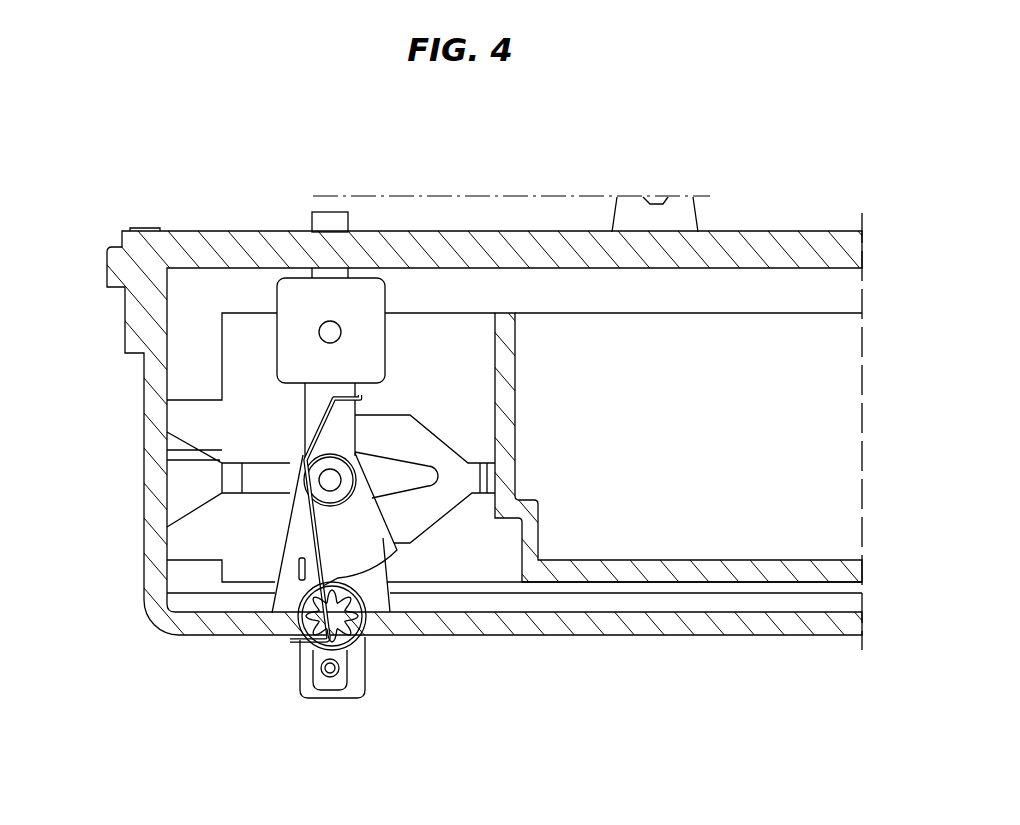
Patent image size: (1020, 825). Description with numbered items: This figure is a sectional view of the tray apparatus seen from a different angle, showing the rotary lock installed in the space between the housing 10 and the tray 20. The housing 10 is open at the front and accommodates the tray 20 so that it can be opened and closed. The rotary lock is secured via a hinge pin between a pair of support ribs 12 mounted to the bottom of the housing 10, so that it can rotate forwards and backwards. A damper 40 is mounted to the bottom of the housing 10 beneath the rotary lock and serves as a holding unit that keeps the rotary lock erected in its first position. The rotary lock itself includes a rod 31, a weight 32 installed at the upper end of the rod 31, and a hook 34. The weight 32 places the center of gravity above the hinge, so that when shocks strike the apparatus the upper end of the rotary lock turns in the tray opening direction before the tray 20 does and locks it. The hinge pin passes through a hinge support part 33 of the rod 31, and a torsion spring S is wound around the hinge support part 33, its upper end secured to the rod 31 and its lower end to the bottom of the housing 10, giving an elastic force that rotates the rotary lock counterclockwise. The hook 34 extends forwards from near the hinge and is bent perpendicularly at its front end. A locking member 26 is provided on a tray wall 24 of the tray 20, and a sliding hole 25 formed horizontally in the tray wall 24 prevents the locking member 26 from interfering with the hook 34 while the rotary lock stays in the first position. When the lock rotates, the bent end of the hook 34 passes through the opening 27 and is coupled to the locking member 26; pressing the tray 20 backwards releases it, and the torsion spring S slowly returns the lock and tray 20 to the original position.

The housing 10 is at (695, 625).
The support ribs 12 is at (292, 548).
The tray 20 is at (800, 570).
The tray wall 24 is at (239, 362).
The sliding hole 25 is at (257, 478).
The locking member 26 is at (365, 457).
The opening 27 is at (450, 495).
The rod 31 is at (331, 212).
The weight 32 is at (300, 297).
The hinge support part 33 is at (318, 460).
The hook 34 is at (407, 482).
The damper 40 is at (360, 660).
The torsion spring S is at (318, 555).